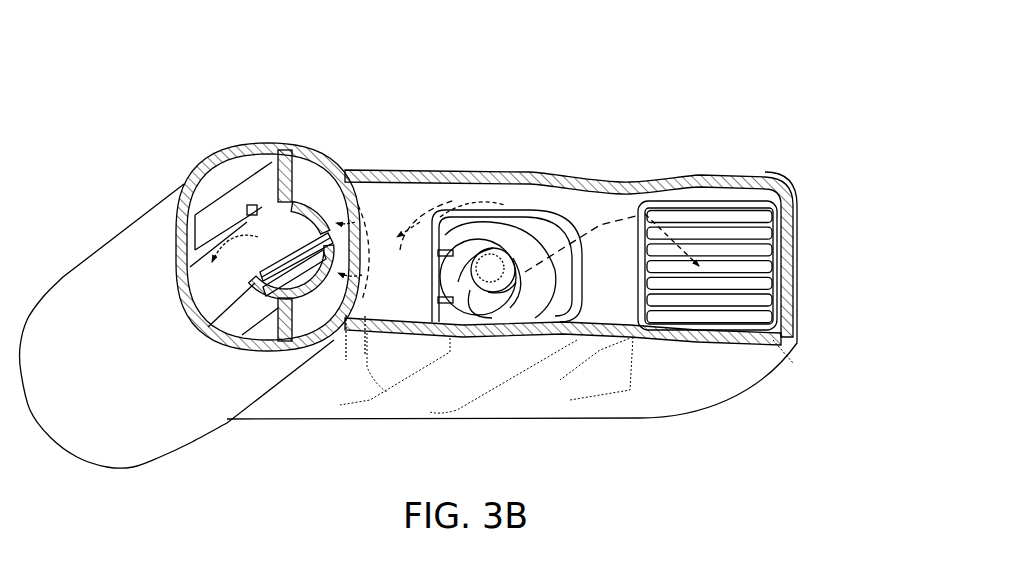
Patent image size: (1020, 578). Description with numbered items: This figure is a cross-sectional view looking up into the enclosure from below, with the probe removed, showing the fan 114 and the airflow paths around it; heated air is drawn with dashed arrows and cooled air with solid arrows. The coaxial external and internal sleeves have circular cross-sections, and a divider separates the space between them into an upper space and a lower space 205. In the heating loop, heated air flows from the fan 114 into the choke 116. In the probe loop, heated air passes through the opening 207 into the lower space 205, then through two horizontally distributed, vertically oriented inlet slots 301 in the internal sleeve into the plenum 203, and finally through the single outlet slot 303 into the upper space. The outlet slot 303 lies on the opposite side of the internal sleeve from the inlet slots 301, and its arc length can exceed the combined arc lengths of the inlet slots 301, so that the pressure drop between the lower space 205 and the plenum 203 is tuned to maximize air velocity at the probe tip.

The plenum 203 is at (281, 233).
The lower space 205 is at (321, 182).
The inlet slots 301 is at (335, 262).
The fan 114 is at (506, 252).
The opening 207 is at (357, 303).
The outlet slot 303 is at (235, 277).
The choke 116 is at (683, 302).